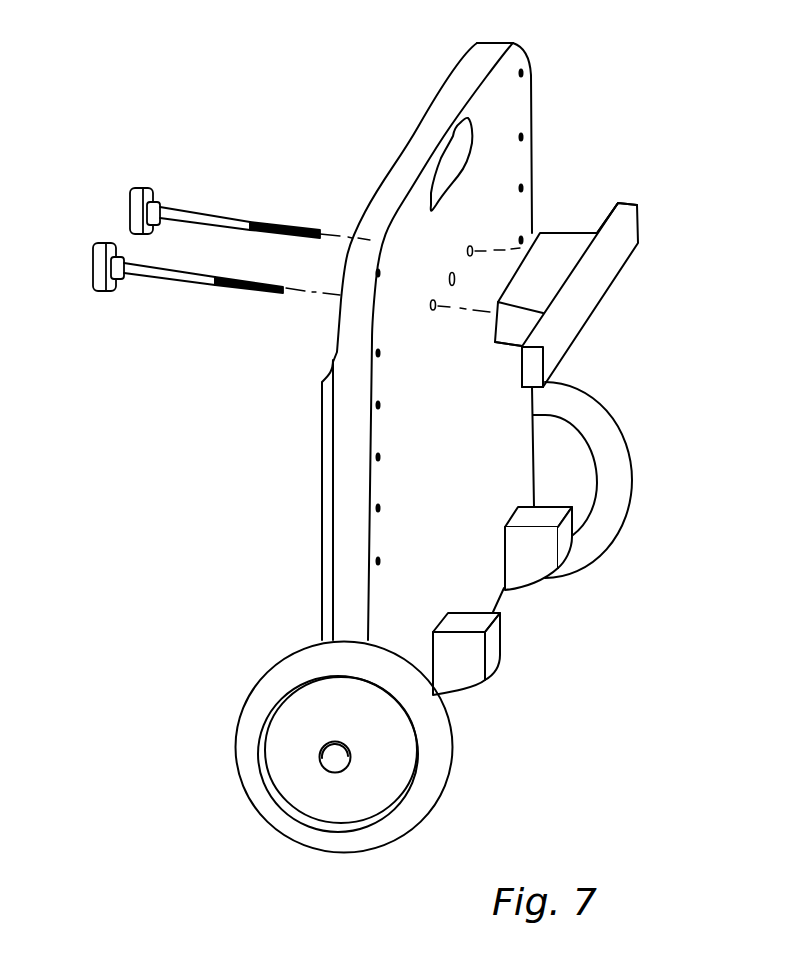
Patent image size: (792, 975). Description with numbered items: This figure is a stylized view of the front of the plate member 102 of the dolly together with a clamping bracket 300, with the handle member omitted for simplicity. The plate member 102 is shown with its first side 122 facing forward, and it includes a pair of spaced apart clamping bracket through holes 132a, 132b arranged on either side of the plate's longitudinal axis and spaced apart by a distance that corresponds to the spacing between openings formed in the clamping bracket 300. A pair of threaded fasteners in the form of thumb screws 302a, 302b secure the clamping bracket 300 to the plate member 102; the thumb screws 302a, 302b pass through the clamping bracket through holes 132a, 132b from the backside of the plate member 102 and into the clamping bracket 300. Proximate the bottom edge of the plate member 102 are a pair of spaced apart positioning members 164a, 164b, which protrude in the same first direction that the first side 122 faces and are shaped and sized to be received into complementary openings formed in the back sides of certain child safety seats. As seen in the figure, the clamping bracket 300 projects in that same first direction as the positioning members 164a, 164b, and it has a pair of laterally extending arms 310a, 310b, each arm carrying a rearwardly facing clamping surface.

The plate member 102 is at (545, 125).
The first side 122 is at (480, 583).
The clamping bracket through hole 132a is at (471, 250).
The clamping bracket through hole 132b is at (433, 307).
The positioning member 164a is at (537, 543).
The positioning member 164b is at (477, 652).
The clamping bracket 300 is at (641, 274).
The thumb screw 302a is at (207, 207).
The thumb screw 302b is at (163, 283).
The laterally extending arm 310a is at (625, 211).
The laterally extending arm 310b is at (537, 335).